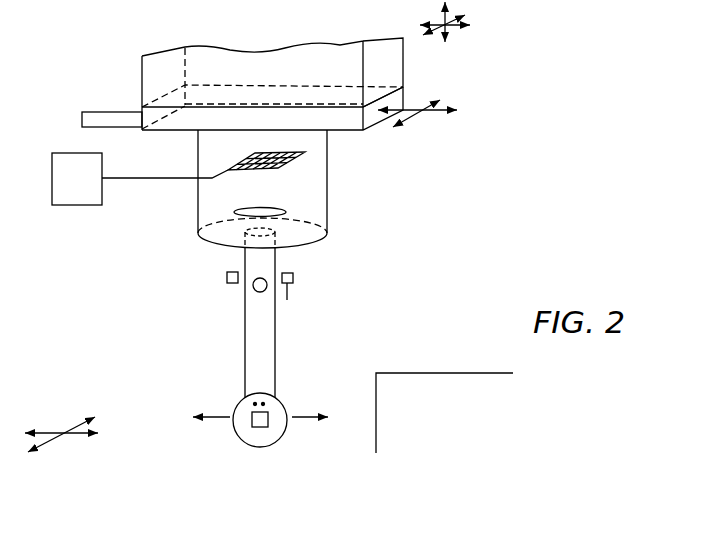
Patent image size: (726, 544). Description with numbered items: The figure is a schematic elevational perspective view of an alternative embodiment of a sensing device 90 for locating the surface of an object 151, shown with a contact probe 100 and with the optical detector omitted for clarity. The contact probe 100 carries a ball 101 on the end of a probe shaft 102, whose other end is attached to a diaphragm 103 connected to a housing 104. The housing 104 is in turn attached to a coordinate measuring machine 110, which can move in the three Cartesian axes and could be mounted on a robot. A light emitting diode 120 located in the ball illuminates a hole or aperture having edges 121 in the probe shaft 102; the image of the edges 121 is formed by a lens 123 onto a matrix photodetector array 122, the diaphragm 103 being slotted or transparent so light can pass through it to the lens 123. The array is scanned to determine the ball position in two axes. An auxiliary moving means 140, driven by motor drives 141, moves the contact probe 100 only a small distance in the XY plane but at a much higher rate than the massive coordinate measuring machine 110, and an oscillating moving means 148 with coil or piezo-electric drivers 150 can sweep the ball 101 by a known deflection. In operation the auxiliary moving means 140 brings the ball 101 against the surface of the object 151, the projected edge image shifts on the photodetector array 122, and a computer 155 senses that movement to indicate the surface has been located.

The sensing device 90 is at (433, 225).
The contact probe 100 is at (295, 296).
The ball 101 is at (242, 397).
The probe shaft 102 is at (275, 340).
The diaphragm 103 is at (323, 240).
The housing 104 is at (327, 167).
The coordinate measuring machine 110 is at (405, 72).
The light emitting diode 120 is at (262, 425).
The edges 121 is at (252, 389).
The matrix photodetector array 122 is at (248, 157).
The lens 123 is at (262, 210).
The auxiliary moving means 140 is at (363, 131).
The motor drives 141 is at (97, 117).
The oscillating moving means 148 is at (185, 262).
The drivers 150 is at (227, 282).
The object 151 is at (440, 418).
The computer 155 is at (92, 189).